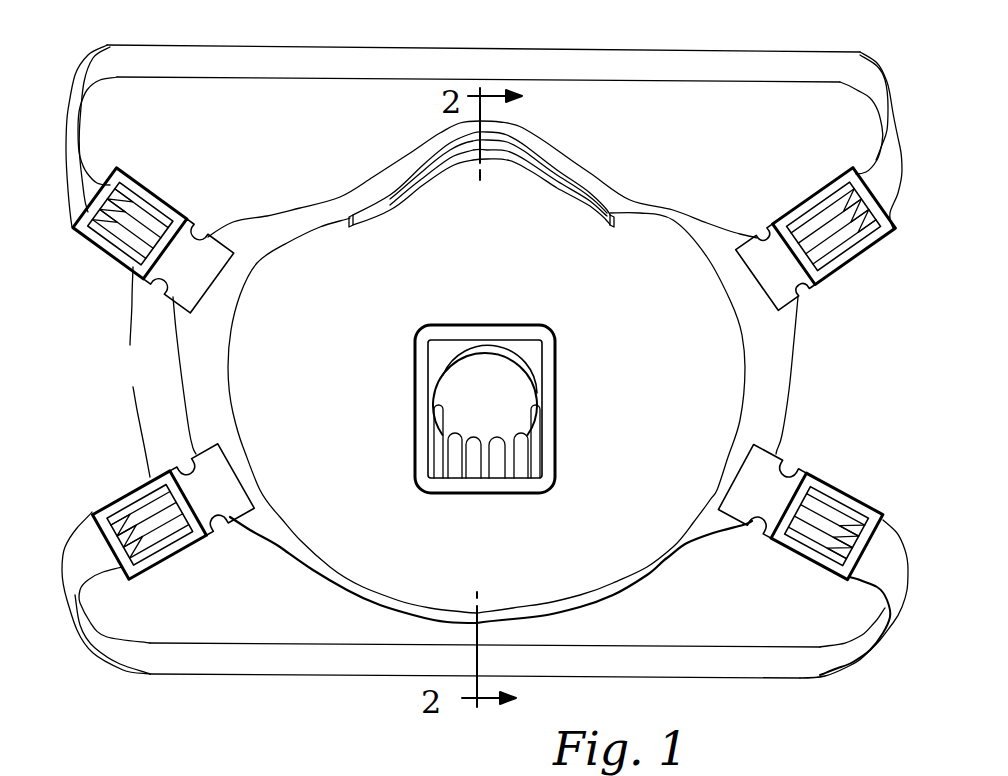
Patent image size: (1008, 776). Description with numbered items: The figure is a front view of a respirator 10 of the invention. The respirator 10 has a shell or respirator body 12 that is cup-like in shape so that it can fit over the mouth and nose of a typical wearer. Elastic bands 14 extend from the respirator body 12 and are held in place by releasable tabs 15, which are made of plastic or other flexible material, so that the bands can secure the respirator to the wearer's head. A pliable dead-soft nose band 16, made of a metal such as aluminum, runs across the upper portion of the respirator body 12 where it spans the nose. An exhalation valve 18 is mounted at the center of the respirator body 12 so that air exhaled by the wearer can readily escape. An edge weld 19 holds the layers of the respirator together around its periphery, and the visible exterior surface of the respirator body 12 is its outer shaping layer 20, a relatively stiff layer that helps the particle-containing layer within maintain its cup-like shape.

The respirator 10 is at (530, 372).
The respirator body 12 is at (485, 418).
The elastic bands 14 is at (331, 48).
The releasable tabs 15 is at (840, 263).
The nose band 16 is at (560, 190).
The exhalation valve 18 is at (515, 422).
The edge weld 19 is at (660, 213).
The outer shaping layer 20 is at (362, 402).